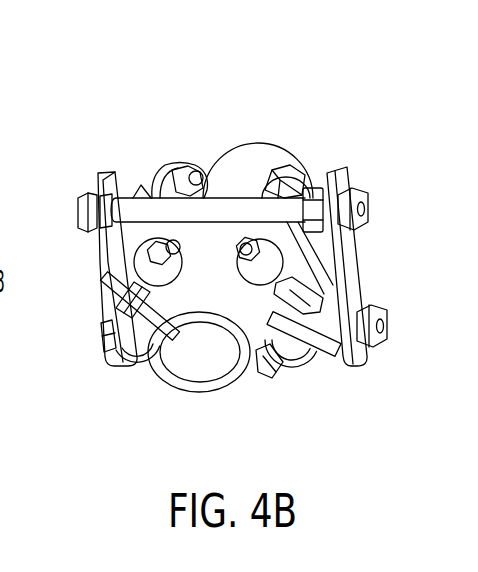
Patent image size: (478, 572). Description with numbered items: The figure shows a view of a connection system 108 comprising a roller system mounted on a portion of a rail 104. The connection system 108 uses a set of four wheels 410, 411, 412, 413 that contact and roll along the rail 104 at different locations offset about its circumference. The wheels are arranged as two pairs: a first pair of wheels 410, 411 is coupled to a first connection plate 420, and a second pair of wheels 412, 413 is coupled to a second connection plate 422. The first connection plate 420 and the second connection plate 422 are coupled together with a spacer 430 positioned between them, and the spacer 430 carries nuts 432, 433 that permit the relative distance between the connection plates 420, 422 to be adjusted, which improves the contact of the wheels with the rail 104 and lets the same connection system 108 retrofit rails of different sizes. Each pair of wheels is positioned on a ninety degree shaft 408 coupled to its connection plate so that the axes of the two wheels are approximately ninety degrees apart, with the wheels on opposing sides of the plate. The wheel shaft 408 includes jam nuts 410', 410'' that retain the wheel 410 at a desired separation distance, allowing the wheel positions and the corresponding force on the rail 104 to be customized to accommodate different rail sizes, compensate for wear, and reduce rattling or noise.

The connection system 108 is at (330, 69).
The rail 104 is at (232, 152).
The spacer 430 is at (238, 210).
The first connection plate 420 is at (97, 262).
The second connection plate 422 is at (368, 267).
The nut 432 is at (83, 198).
The nut 433 is at (355, 189).
The wheel 410 is at (144, 218).
The jam nut 410' is at (92, 157).
The jam nut 410'' is at (170, 169).
The wheel 413 is at (308, 176).
The shaft 408 is at (110, 309).
The wheel 411 is at (146, 358).
The wheel 412 is at (277, 370).